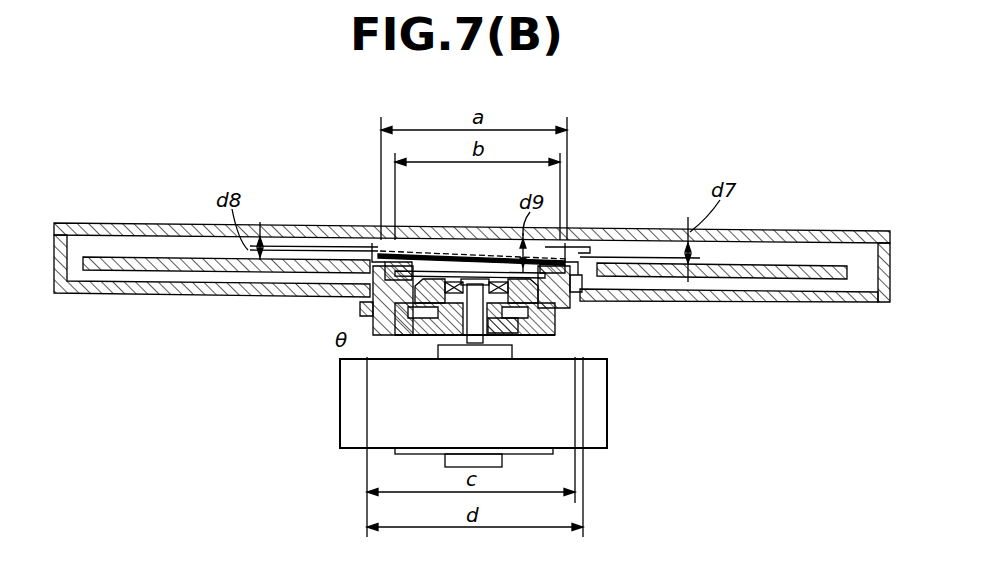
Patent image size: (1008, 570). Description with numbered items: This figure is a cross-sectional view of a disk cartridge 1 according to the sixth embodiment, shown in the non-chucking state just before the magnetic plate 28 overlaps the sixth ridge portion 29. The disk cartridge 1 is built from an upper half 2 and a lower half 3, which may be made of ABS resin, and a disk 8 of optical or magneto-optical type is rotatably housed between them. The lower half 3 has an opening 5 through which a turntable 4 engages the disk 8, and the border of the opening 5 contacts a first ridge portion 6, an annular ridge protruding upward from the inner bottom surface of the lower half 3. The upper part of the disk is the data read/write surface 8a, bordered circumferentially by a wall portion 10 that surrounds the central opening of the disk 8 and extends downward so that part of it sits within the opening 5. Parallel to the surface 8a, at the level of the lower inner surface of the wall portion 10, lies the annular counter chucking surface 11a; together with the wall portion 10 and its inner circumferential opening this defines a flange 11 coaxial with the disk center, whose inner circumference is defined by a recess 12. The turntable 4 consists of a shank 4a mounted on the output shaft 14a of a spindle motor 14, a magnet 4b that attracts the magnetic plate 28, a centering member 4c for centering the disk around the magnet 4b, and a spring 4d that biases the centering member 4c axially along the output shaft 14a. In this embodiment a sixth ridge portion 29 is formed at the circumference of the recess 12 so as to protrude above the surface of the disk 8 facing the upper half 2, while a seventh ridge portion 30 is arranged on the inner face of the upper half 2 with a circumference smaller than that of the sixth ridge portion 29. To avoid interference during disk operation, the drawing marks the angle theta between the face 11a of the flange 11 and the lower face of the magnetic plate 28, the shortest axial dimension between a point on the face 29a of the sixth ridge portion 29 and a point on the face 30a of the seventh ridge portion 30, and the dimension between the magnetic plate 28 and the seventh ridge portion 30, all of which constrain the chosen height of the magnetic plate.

The disk cartridge 1 is at (900, 238).
The upper half 2 is at (884, 232).
The lower half 3 is at (882, 302).
The turntable 4 is at (373, 315).
The shank 4a is at (525, 335).
The magnet 4b is at (466, 262).
The centering member 4c is at (420, 308).
The spring 4d is at (466, 335).
The opening 5 is at (370, 300).
The first ridge portion 6 is at (650, 300).
The disk 8 is at (750, 265).
The data read/write surface 8a is at (160, 272).
The wall portion 10 is at (357, 255).
The flange 11 is at (573, 318).
The counter chucking surface 11a is at (562, 256).
The recess 12 is at (441, 254).
The spindle motor 14 is at (598, 420).
The output shaft 14a is at (470, 352).
The magnetic plate 28 is at (500, 255).
The sixth ridge portion 29 is at (580, 266).
The face of the sixth ridge portion 29a is at (373, 253).
The seventh ridge portion 30 is at (405, 255).
The face of the seventh ridge portion 30a is at (572, 248).